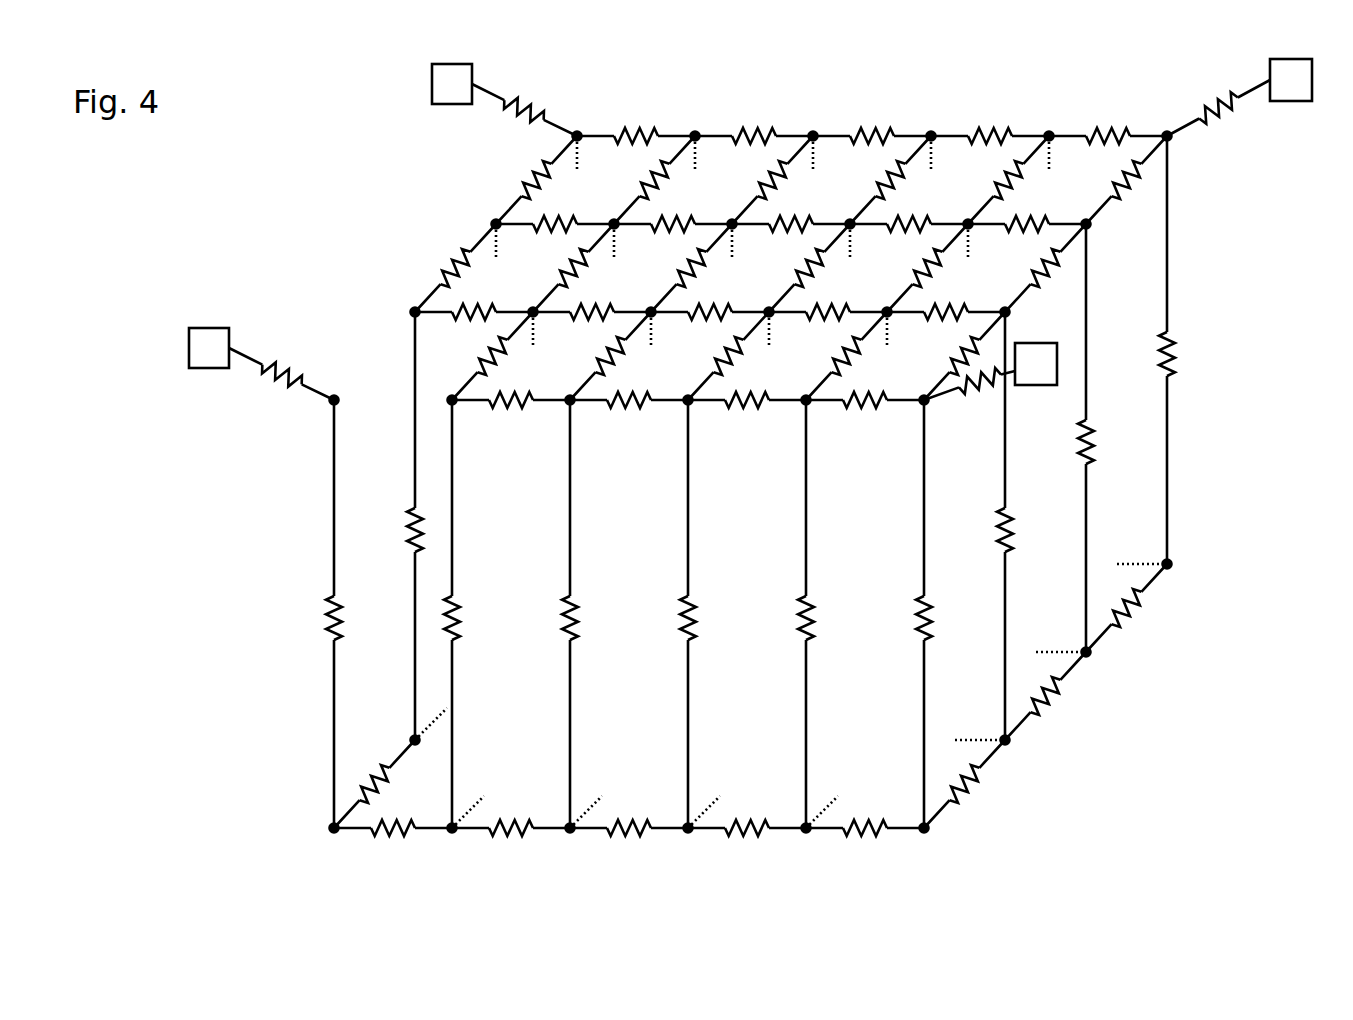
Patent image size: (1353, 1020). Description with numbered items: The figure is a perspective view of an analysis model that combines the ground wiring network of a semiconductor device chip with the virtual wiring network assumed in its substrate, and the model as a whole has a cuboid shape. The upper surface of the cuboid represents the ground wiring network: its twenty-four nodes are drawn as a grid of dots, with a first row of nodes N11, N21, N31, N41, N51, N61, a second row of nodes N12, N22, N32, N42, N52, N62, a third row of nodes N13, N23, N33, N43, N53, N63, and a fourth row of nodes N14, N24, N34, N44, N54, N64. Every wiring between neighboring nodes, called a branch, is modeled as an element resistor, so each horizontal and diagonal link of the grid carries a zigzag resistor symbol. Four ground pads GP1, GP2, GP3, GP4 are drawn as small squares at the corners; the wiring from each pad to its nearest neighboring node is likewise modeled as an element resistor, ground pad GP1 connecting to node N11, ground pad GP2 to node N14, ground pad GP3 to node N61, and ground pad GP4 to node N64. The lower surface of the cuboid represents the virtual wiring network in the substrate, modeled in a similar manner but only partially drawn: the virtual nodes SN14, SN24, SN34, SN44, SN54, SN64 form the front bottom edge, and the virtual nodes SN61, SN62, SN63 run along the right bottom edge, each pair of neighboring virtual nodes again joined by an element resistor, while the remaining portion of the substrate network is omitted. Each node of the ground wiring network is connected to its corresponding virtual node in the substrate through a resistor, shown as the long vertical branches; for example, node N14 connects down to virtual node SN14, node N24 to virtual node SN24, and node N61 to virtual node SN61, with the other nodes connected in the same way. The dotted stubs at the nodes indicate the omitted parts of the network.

The ground pad GP1 is at (478, 100).
The ground pad GP2 is at (236, 364).
The ground pad GP3 is at (1239, 83).
The ground pad GP4 is at (991, 378).
The node N11 is at (578, 138).
The node N21 is at (696, 138).
The node N31 is at (814, 138).
The node N41 is at (932, 138).
The node N51 is at (1050, 138).
The node N61 is at (1160, 122).
The node N12 is at (469, 233).
The node N22 is at (638, 244).
The node N32 is at (756, 244).
The node N42 is at (874, 244).
The node N52 is at (992, 244).
The node N62 is at (1113, 227).
The node N13 is at (387, 310).
The node N23 is at (557, 333).
The node N33 is at (675, 333).
The node N43 is at (793, 333).
The node N53 is at (911, 333).
The node N63 is at (1031, 317).
The node N14 is at (361, 421).
The node N24 is at (479, 421).
The node N34 is at (597, 421).
The node N44 is at (715, 421).
The node N54 is at (833, 421).
The node N64 is at (949, 421).
The virtual node SN14 is at (325, 846).
The virtual node SN24 is at (452, 832).
The virtual node SN34 is at (568, 832).
The virtual node SN44 is at (687, 832).
The virtual node SN54 is at (805, 832).
The virtual node SN64 is at (923, 846).
The virtual node SN61 is at (1175, 580).
The virtual node SN62 is at (1099, 659).
The virtual node SN63 is at (1015, 747).